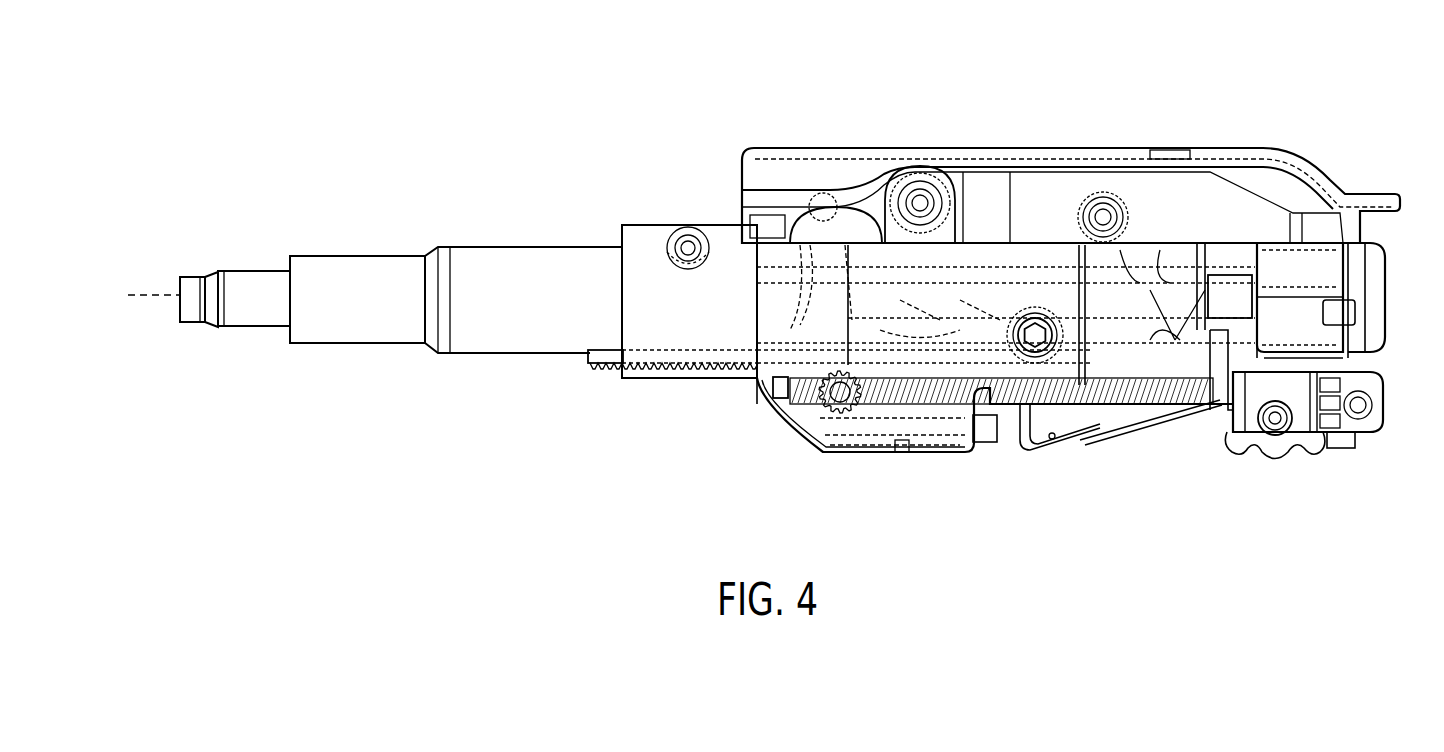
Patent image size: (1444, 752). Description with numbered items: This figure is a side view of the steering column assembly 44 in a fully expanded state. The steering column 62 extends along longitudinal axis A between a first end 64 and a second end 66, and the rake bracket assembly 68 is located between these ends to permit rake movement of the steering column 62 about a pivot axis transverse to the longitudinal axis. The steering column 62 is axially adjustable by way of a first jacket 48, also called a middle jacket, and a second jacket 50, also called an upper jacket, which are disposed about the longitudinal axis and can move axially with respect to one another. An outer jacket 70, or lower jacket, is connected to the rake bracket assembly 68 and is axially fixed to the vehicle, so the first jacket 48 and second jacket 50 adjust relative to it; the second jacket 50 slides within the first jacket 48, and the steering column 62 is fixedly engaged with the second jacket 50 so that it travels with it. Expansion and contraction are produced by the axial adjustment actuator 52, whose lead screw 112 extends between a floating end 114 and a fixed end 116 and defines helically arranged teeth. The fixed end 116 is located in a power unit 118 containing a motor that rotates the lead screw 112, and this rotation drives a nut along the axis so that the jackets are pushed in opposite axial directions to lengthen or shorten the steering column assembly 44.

The steering column assembly 44 is at (1207, 97).
The first jacket 48 is at (634, 216).
The second jacket 50 is at (392, 250).
The axial adjustment actuator 52 is at (884, 472).
The steering column 62 is at (174, 312).
The first end 64 is at (1355, 238).
The second end 66 is at (196, 275).
The rake bracket assembly 68 is at (1274, 141).
The outer jacket 70 is at (1112, 368).
The lead screw 112 is at (1023, 406).
The floating end 114 is at (781, 398).
The fixed end 116 is at (1200, 402).
The power unit 118 is at (1278, 424).